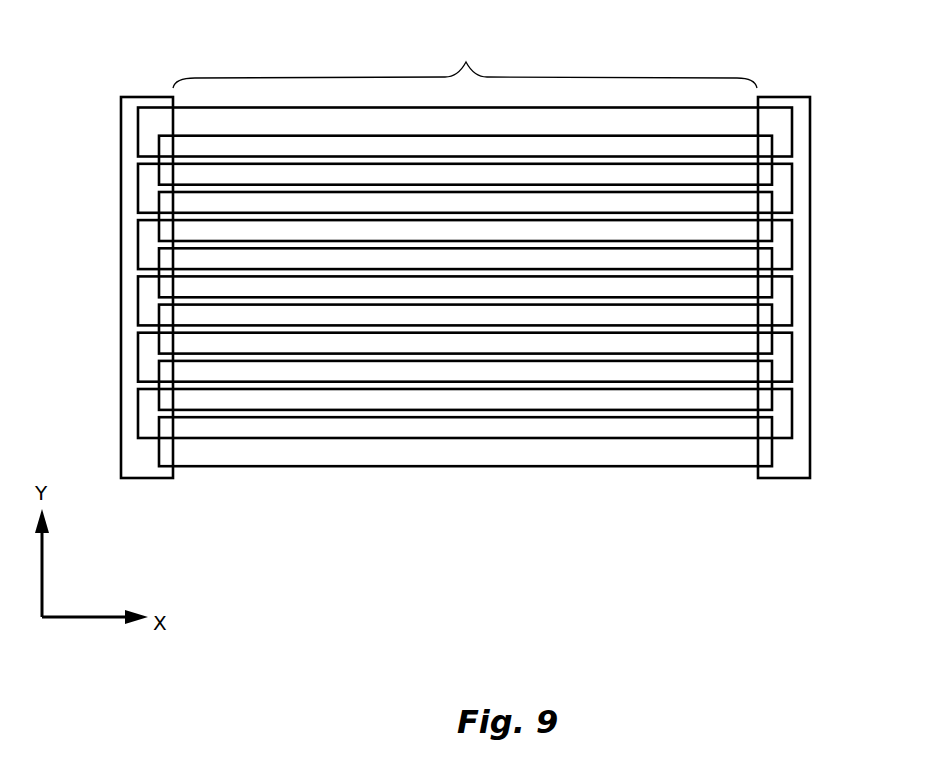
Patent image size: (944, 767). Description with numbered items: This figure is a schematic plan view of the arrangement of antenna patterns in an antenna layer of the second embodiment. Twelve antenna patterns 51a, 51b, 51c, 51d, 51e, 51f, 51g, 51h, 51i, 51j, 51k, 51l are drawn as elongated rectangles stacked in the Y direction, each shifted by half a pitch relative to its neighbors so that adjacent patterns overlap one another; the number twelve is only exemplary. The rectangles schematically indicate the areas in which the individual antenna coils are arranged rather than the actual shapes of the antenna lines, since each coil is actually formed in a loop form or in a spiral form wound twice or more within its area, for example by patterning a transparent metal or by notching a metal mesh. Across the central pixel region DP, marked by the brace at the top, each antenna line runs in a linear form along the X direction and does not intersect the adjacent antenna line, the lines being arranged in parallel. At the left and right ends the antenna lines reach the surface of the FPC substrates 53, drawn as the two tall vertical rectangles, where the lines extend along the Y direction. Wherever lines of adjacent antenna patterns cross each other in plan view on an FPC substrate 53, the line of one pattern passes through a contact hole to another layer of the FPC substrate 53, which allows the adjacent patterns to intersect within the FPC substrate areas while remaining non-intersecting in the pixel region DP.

The pixel region DP is at (465, 59).
The FPC substrate 53 is at (142, 465).
The antenna pattern 51a is at (772, 452).
The antenna pattern 51b is at (792, 424).
The antenna pattern 51c is at (772, 396).
The antenna pattern 51d is at (792, 368).
The antenna pattern 51e is at (772, 340).
The antenna pattern 51f is at (792, 312).
The antenna pattern 51g is at (772, 284).
The antenna pattern 51h is at (792, 256).
The antenna pattern 51i is at (772, 228).
The antenna pattern 51j is at (792, 200).
The antenna pattern 51k is at (772, 172).
The antenna pattern 51l is at (792, 144).